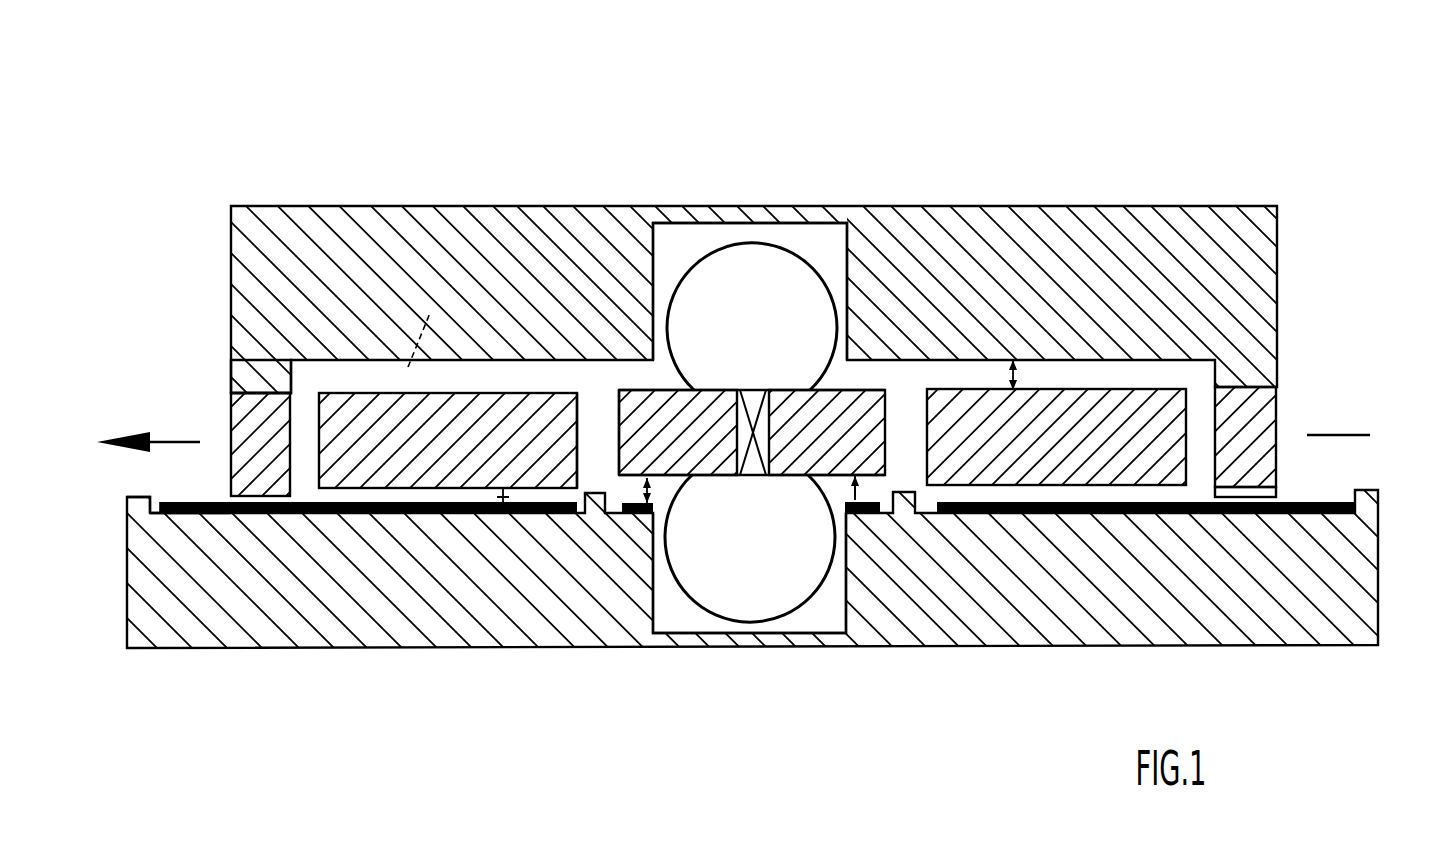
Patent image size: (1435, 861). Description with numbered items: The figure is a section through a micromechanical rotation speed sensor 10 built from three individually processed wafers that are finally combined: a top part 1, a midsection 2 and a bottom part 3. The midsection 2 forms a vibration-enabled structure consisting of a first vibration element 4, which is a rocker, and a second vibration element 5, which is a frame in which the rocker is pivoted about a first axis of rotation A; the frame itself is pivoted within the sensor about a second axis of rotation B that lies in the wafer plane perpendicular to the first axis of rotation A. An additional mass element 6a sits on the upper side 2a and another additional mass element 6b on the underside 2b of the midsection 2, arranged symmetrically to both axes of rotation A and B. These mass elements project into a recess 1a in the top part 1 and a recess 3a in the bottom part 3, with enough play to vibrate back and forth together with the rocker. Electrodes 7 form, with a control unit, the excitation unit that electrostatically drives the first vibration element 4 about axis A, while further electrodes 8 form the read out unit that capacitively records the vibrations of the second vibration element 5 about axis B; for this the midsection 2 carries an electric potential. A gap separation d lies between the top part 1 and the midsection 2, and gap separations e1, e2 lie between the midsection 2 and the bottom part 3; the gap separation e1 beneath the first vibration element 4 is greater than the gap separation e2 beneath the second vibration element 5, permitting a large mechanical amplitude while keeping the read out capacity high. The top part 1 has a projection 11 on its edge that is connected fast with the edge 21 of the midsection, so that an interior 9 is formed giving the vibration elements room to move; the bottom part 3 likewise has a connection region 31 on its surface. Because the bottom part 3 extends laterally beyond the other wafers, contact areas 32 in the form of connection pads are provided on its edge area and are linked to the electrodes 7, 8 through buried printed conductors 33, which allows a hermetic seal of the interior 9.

The micromechanical rotation speed sensor 10 is at (150, 108).
The top part 1 is at (1248, 276).
The recess 1a is at (827, 252).
The projection 11 is at (242, 379).
The midsection 2 is at (785, 429).
The upper side 2a is at (862, 384).
The underside 2b is at (866, 520).
The edge 21 is at (233, 422).
The bottom part 3 is at (1235, 583).
The recess 3a is at (825, 607).
The connection region 31 is at (227, 497).
The contact areas 32 is at (163, 497).
The printed conductors 33 is at (230, 513).
The first vibration element 4 is at (646, 438).
The second vibration element 5 is at (432, 449).
The additional mass element 6a is at (750, 330).
The additional mass element 6b is at (703, 567).
The electrodes 7 is at (634, 513).
The electrodes 8 is at (397, 518).
The interior 9 is at (588, 419).
The first axis of rotation A is at (747, 437).
The second axis of rotation B is at (733, 424).
The gap separation d is at (1027, 377).
The gap separation e1 is at (632, 494).
The gap separation e2 is at (473, 512).